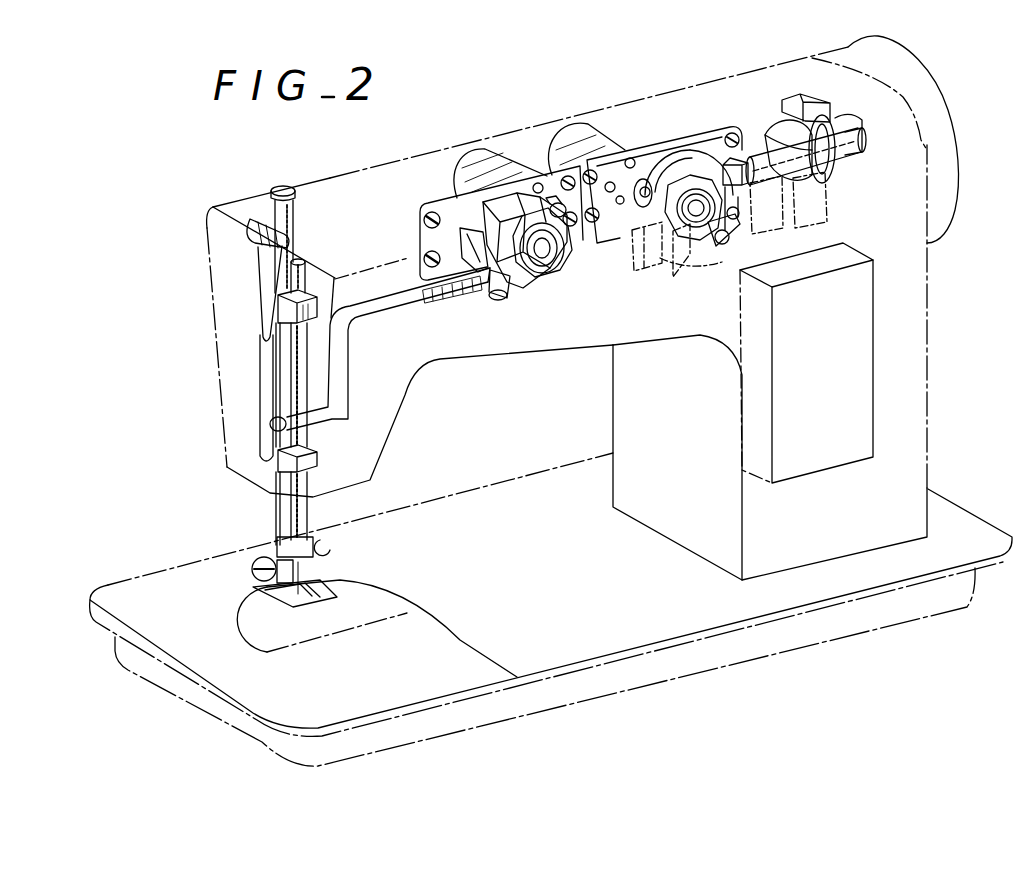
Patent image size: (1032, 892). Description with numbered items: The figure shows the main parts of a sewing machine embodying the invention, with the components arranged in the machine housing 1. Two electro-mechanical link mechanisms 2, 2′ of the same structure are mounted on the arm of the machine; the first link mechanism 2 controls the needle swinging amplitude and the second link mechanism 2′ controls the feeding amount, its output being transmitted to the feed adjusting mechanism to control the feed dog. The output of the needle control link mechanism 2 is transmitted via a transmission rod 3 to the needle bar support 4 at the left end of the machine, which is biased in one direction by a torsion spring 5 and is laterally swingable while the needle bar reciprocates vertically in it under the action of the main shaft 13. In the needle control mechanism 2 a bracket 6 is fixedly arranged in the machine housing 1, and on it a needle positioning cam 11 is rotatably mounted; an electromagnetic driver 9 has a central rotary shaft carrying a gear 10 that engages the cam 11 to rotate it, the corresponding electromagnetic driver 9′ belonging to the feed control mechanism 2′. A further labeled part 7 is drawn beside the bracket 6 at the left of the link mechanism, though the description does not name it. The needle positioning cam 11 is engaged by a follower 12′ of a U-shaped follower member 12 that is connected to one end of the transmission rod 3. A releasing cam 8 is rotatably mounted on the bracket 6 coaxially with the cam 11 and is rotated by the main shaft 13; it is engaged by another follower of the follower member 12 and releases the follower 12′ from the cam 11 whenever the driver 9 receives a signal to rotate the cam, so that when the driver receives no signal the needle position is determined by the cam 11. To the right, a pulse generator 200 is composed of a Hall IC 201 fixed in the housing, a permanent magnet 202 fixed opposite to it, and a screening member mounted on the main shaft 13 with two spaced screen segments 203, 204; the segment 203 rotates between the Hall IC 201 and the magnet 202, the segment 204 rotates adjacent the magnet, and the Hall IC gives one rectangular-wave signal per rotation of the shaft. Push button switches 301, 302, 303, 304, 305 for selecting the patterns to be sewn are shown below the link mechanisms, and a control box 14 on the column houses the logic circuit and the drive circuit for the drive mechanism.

The machine housing 1 is at (930, 380).
The electro-mechanical link mechanism 2 is at (414, 200).
The electro-mechanical link mechanism 2′ is at (653, 140).
The transmission rod 3 is at (373, 310).
The needle bar support 4 is at (262, 376).
The torsion spring 5 is at (272, 284).
The bracket 6 is at (420, 217).
The hidden edge 7 is at (400, 260).
The releasing cam 8 is at (577, 260).
The electromagnetic driver 9 is at (480, 152).
The electromagnetic driver 9′ is at (573, 128).
The gear 10 is at (547, 273).
The needle positioning cam 11 is at (482, 208).
The U-shaped follower member 12 is at (436, 205).
The follower 12′ is at (472, 252).
The main shaft 13 is at (800, 194).
The control box 14 is at (863, 353).
The pulse generator 200 is at (776, 113).
The Hall IC 201 is at (858, 148).
The permanent magnet 202 is at (806, 100).
The screen segment 203 is at (835, 175).
The screen segment 204 is at (778, 128).
The push button switch 301 is at (632, 268).
The push button switch 302 is at (675, 260).
The push button switch 303 is at (714, 262).
The push button switch 304 is at (745, 232).
The push button switch 305 is at (800, 211).